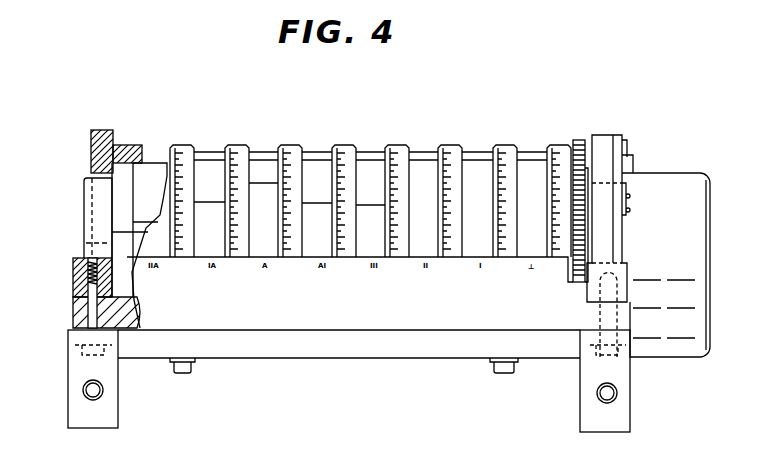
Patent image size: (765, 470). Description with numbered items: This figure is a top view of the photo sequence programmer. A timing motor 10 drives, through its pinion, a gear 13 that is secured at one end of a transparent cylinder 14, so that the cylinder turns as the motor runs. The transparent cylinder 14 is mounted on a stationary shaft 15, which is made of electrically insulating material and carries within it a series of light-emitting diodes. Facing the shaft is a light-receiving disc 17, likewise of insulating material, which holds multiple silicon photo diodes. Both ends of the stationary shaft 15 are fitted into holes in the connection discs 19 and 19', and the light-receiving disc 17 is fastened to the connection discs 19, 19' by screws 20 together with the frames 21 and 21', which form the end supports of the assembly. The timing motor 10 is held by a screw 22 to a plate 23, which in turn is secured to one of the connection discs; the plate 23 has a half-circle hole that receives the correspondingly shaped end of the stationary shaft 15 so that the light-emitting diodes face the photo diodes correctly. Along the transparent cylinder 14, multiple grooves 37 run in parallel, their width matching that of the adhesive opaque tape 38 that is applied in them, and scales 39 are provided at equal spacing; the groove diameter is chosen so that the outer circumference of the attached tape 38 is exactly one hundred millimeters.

The timing motor 10 is at (688, 173).
The gear 13 is at (577, 140).
The transparent cylinder 14 is at (240, 145).
The stationary shaft 15 is at (138, 200).
The light-receiving disc 17 is at (302, 312).
The connection disc 19 is at (628, 193).
The connection disc 19' is at (92, 190).
The screw 20 is at (90, 350).
The frame 21 is at (586, 386).
The frame 21' is at (119, 379).
The screw 22 is at (633, 165).
The plate 23 is at (622, 140).
The grooves 37 is at (371, 152).
The adhesive opaque tape 38 is at (313, 203).
The scales 39 is at (403, 152).